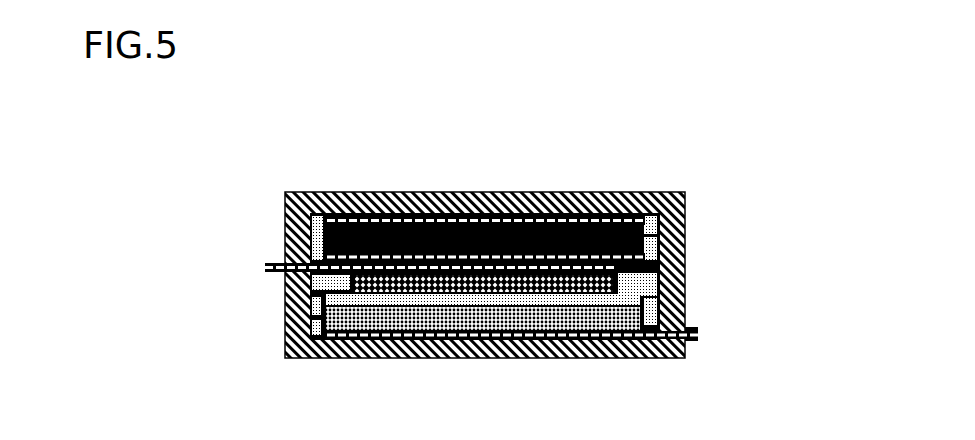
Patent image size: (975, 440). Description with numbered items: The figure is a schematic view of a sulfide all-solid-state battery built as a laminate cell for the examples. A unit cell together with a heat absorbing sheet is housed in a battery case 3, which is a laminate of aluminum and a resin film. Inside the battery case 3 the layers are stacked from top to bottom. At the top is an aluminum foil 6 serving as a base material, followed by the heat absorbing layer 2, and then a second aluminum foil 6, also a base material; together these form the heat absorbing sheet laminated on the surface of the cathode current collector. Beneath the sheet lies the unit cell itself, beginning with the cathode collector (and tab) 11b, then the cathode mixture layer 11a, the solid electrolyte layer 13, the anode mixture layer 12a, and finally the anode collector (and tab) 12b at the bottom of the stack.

The battery case 3 is at (307, 192).
The aluminum foil 6 is at (686, 203).
The heat absorbing layer 2 is at (686, 222).
The cathode collector (and tab) 11b is at (686, 269).
The cathode mixture layer 11a is at (686, 313).
The solid electrolyte layer 13 is at (322, 297).
The anode mixture layer 12a is at (322, 321).
The anode collector (and tab) 12b is at (316, 337).